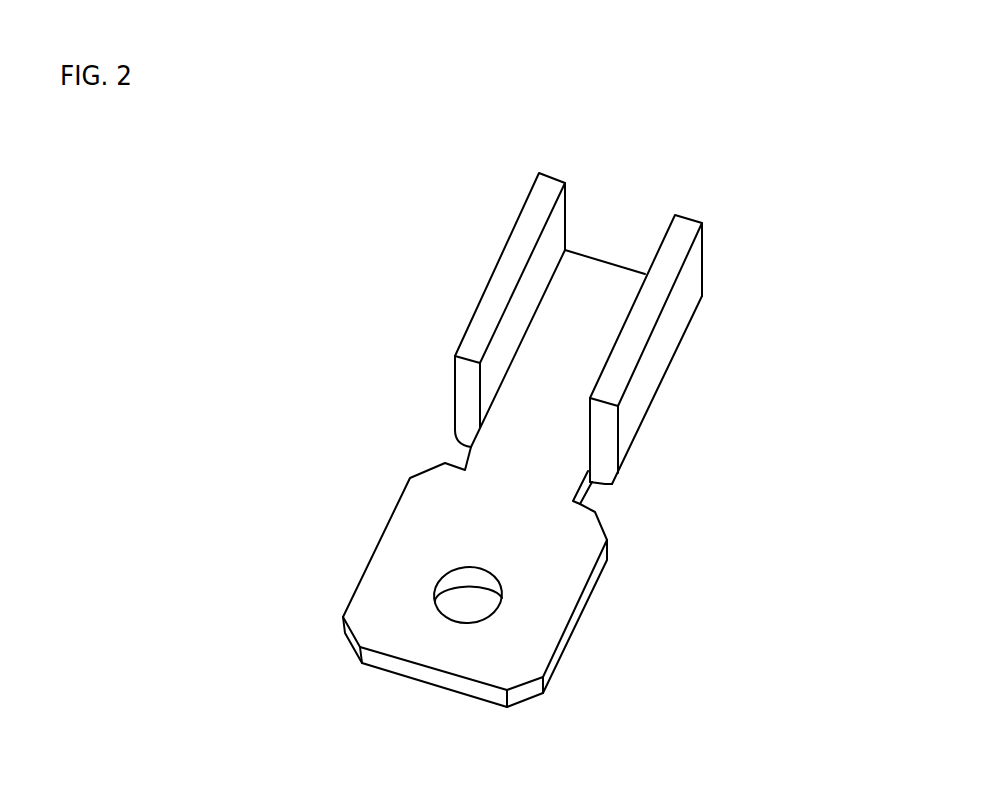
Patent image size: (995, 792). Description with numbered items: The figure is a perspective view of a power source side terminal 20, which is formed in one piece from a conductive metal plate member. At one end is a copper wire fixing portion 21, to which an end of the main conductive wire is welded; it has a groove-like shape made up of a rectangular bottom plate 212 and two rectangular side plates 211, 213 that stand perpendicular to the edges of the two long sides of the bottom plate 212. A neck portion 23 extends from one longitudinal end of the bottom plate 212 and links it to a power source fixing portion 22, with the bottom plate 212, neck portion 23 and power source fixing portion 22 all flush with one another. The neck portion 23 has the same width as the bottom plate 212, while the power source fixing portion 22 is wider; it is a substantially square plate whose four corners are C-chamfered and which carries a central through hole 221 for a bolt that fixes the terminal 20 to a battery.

The power source side terminal 20 is at (862, 147).
The copper wire fixing portion 21 is at (603, 228).
The side plate 211 is at (697, 275).
The bottom plate 212 is at (620, 282).
The side plate 213 is at (535, 207).
The power source fixing portion 22 is at (585, 595).
The through hole 221 is at (478, 612).
The neck portion 23 is at (565, 492).